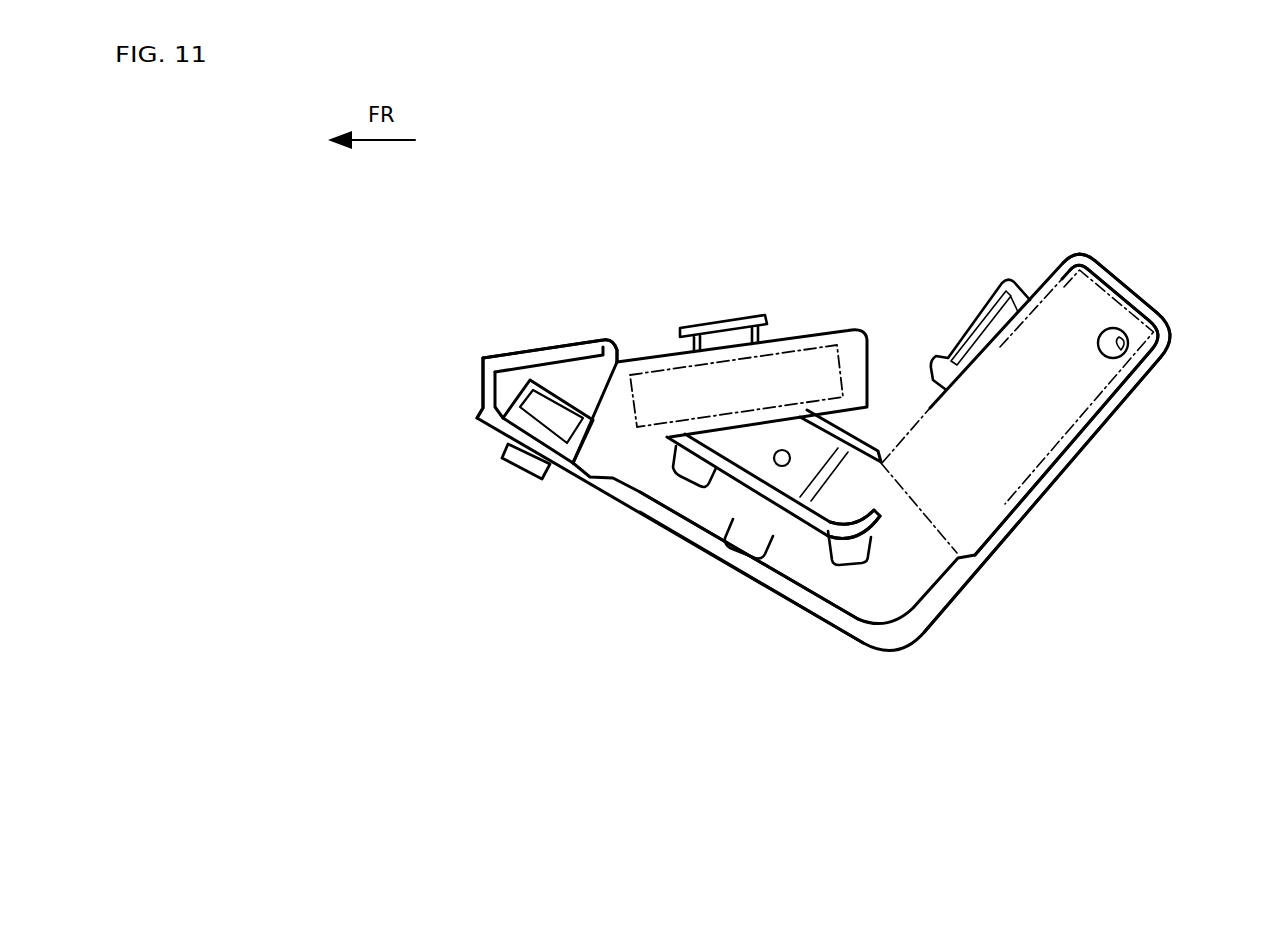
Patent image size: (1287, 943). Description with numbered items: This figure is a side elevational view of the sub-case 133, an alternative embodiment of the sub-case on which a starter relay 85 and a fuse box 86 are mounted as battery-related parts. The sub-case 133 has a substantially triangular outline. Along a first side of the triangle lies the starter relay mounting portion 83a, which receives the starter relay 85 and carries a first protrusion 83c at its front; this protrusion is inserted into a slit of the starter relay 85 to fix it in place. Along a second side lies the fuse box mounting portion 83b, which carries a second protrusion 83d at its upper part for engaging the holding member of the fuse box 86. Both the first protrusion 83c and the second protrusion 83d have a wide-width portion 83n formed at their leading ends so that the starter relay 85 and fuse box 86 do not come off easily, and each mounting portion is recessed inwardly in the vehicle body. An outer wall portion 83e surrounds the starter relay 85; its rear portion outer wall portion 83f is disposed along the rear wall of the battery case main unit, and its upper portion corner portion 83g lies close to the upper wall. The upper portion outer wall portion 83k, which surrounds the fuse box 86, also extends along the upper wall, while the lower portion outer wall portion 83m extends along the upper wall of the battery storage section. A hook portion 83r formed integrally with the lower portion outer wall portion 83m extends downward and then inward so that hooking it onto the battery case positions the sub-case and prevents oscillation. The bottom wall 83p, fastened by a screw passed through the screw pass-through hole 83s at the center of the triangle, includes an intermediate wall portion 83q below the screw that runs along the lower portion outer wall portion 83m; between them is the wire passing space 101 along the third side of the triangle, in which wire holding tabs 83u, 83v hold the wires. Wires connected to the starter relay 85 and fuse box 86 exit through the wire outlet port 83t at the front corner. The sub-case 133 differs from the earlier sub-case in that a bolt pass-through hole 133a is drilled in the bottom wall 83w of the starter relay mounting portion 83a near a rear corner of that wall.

The sub-case 133 is at (533, 266).
The bolt pass-through hole 133a is at (1121, 352).
The wire passing space 101 is at (718, 504).
The starter relay 85 is at (1100, 458).
The fuse box 86 is at (785, 357).
The starter relay mounting portion 83a is at (1082, 330).
The fuse box mounting portion 83b is at (703, 393).
The first protrusion 83c is at (983, 322).
The second protrusion 83d is at (727, 324).
The outer wall portion 83e is at (1160, 322).
The rear portion outer wall portion 83f is at (1027, 508).
The upper portion corner portion 83g is at (1073, 254).
The upper portion outer wall portion 83k is at (585, 343).
The lower portion outer wall portion 83m is at (700, 543).
The wide-width portion 83n is at (748, 325).
The bottom wall 83p is at (757, 477).
The intermediate wall portion 83q is at (877, 511).
The hook portion 83r is at (523, 463).
The screw pass-through hole 83s is at (783, 467).
The wire outlet port 83t is at (484, 392).
The wire holding tab 83u is at (693, 473).
The wire holding tab 83v is at (553, 398).
The bottom wall 83w is at (1030, 438).